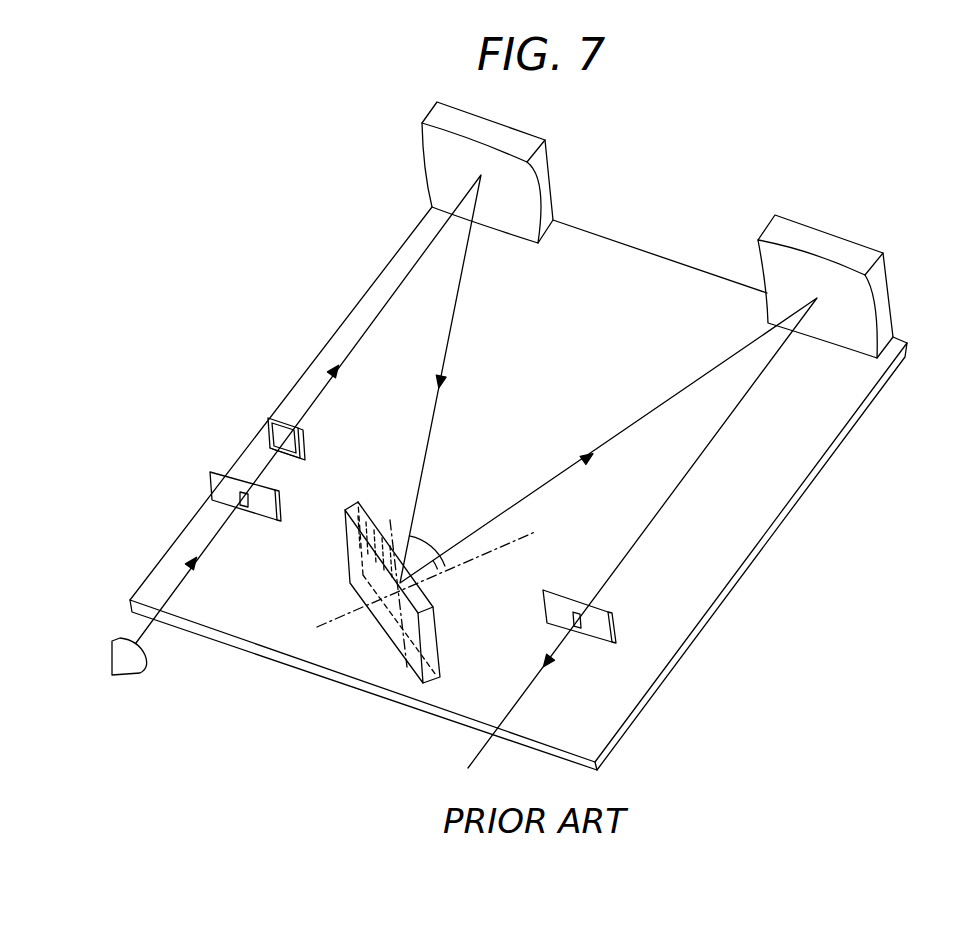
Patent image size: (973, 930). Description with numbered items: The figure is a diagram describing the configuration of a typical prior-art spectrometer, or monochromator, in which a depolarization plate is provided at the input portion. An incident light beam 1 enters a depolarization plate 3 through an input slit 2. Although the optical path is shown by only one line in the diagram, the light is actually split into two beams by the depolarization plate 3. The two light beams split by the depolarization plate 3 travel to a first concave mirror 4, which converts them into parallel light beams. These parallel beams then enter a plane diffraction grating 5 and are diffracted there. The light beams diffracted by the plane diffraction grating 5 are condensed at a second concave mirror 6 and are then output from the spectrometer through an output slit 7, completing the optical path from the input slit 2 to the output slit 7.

The incident light beam 1 is at (138, 645).
The input slit 2 is at (210, 487).
The depolarization plate 3 is at (268, 433).
The first concave mirror 4 is at (440, 156).
The plane diffraction grating 5 is at (352, 547).
The second concave mirror 6 is at (880, 290).
The output slit 7 is at (598, 625).